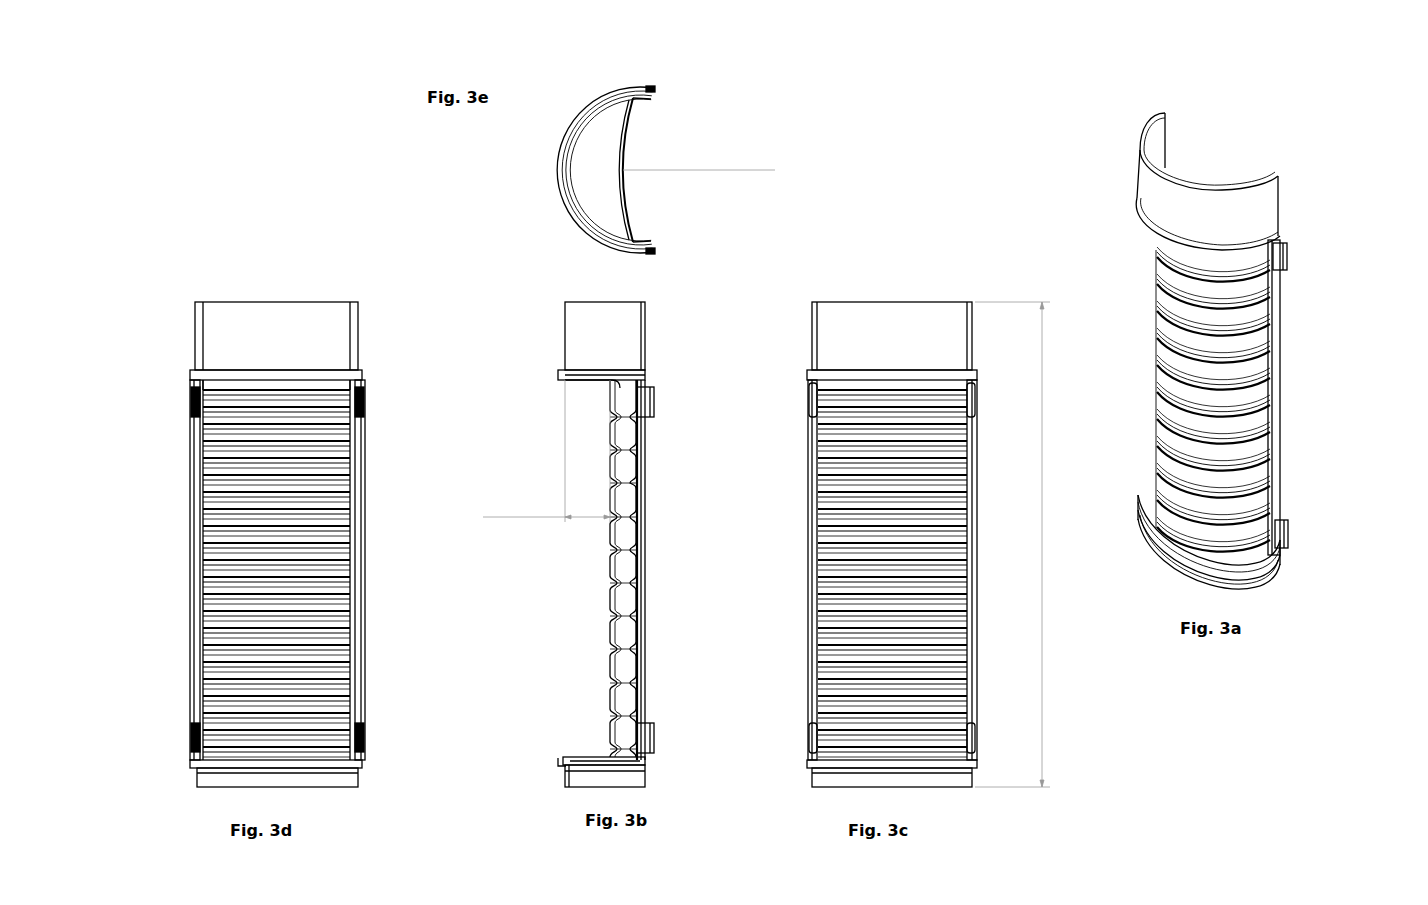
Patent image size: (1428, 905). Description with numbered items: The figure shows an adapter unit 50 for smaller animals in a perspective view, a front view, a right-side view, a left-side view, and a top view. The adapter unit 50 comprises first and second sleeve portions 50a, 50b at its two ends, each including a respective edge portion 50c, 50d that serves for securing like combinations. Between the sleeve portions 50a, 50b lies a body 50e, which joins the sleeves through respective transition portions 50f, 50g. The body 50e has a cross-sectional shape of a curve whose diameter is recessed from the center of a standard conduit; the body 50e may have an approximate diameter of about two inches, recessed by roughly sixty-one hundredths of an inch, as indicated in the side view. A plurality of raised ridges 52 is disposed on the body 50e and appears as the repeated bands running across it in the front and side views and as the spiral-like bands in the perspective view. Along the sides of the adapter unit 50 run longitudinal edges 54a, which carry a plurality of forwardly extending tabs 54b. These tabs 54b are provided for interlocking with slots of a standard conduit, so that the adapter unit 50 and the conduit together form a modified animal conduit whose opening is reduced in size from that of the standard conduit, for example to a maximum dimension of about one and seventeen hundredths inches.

In FIG. 3D, the adapter unit 50 is at (350, 270).
In FIG. 3B, the adapter unit 50 is at (678, 308).
In FIG. 3C, the adapter unit 50 is at (980, 270).
In FIG. 3E, the adapter unit 50 is at (682, 103).
In FIG. 3A, the adapter unit 50 is at (1120, 92).
In FIG. 3D, the first sleeve portion 50a is at (276, 336).
In FIG. 3B, the first sleeve portion 50a is at (605, 336).
In FIG. 3C, the first sleeve portion 50a is at (892, 336).
In FIG. 3A, the first sleeve portion 50a is at (1208, 181).
In FIG. 3D, the second sleeve portion 50b is at (258, 778).
In FIG. 3B, the second sleeve portion 50b is at (580, 772).
In FIG. 3C, the second sleeve portion 50b is at (858, 772).
In FIG. 3A, the second sleeve portion 50b is at (1183, 575).
In FIG. 3B, the edge portion 50c is at (560, 372).
In FIG. 3E, the edge portion 50c is at (558, 183).
In FIG. 3B, the edge portion 50d is at (560, 763).
In FIG. 3A, the edge portion 50d is at (1147, 522).
In FIG. 3D, the body 50e is at (320, 540).
In FIG. 3B, the body 50e is at (613, 585).
In FIG. 3C, the body 50e is at (830, 520).
In FIG. 3E, the body 50e is at (624, 185).
In FIG. 3A, the body 50e is at (1168, 350).
In FIG. 3B, the transition portion 50f is at (592, 383).
In FIG. 3E, the transition portion 50f is at (592, 170).
In FIG. 3B, the transition portion 50g is at (597, 755).
In FIG. 3A, the transition portion 50g is at (1183, 535).
In FIG. 3D, the raised ridges 52 is at (320, 493).
In FIG. 3C, the raised ridges 52 is at (838, 463).
In FIG. 3D, the longitudinal edges 54a is at (192, 497).
In FIG. 3B, the longitudinal edges 54a is at (637, 545).
In FIG. 3C, the longitudinal edges 54a is at (892, 570).
In FIG. 3A, the longitudinal edges 54a is at (1272, 405).
In FIG. 3D, the forwardly extending tabs 54b is at (363, 405).
In FIG. 3B, the forwardly extending tabs 54b is at (652, 396).
In FIG. 3C, the forwardly extending tabs 54b is at (812, 740).
In FIG. 3E, the forwardly extending tabs 54b is at (651, 88).
In FIG. 3A, the forwardly extending tabs 54b is at (1285, 250).